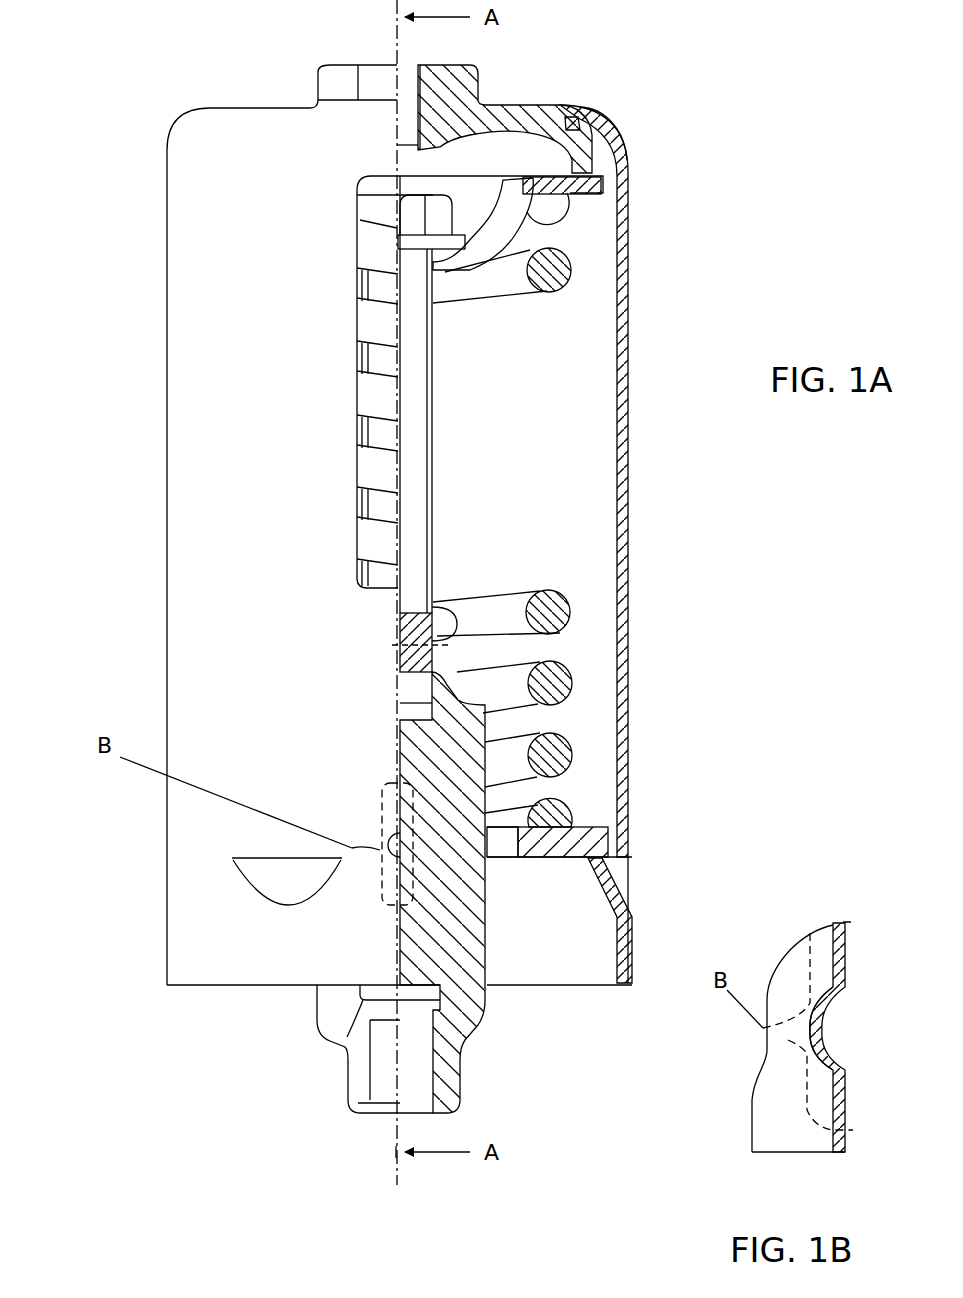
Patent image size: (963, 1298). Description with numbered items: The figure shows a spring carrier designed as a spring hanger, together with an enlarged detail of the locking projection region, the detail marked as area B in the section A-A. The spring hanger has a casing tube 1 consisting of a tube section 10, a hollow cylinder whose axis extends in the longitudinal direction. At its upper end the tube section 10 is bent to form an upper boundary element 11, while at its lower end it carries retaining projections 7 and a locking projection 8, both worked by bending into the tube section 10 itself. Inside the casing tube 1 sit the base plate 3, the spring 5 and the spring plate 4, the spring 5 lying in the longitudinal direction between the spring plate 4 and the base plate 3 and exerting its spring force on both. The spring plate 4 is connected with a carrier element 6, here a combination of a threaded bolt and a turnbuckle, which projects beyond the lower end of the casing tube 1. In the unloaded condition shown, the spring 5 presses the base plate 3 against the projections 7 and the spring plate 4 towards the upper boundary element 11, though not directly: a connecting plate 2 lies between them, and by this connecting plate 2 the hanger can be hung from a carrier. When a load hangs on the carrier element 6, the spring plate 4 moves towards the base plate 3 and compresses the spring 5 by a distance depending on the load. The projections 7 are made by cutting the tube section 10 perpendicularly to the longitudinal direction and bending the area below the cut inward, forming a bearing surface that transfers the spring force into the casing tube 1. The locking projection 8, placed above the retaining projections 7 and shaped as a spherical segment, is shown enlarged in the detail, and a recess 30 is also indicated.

In FIG. 1A, the casing tube 1 is at (204, 503).
In FIG. 1A, the connecting plate 2 is at (463, 73).
In FIG. 1A, the base plate 3 is at (577, 842).
In FIG. 1A, the spring plate 4 is at (580, 184).
In FIG. 1A, the spring 5 is at (553, 268).
In FIG. 1A, the carrier element 6 is at (470, 985).
In FIG. 1A, the retaining projection 7 is at (270, 870).
In FIG. 1A, the locking projection 8 is at (380, 855).
In FIG. 1B, the locking projection 8 is at (817, 1033).
In FIG. 1A, the tube section 10 is at (627, 553).
In FIG. 1B, the tube section 10 is at (843, 1153).
In FIG. 1A, the upper boundary element 11 is at (610, 127).
In FIG. 1A, the recess 30 is at (497, 847).